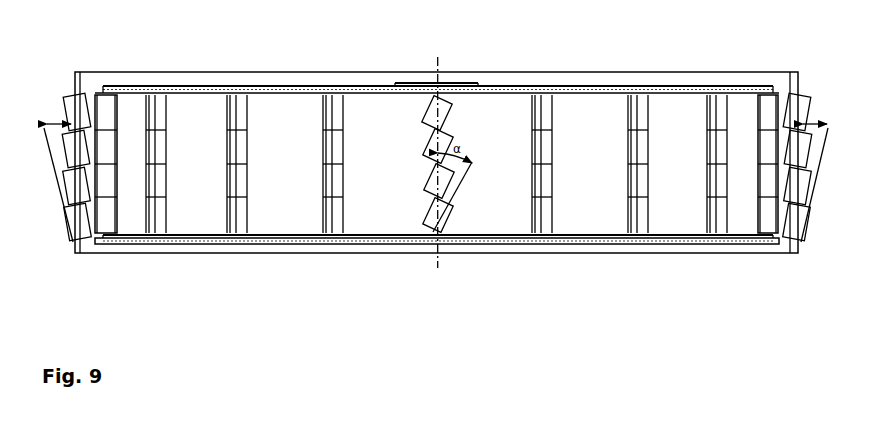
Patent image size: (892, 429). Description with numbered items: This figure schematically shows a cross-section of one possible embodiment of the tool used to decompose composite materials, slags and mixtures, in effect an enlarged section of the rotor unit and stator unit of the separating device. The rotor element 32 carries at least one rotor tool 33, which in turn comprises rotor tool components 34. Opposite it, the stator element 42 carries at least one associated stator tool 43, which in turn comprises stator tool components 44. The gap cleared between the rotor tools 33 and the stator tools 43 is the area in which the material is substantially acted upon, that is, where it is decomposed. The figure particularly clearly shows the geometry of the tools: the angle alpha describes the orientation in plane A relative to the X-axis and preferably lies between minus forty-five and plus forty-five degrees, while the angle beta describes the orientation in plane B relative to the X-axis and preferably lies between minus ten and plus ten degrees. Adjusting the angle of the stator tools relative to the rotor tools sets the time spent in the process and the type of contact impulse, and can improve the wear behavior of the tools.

The rotor element 32 is at (281, 244).
The rotor tool 33 is at (97, 91).
The rotor tool components 34 is at (771, 243).
The stator element 42 is at (250, 253).
The stator tool 43 is at (71, 90).
The stator tool components 44 is at (790, 250).